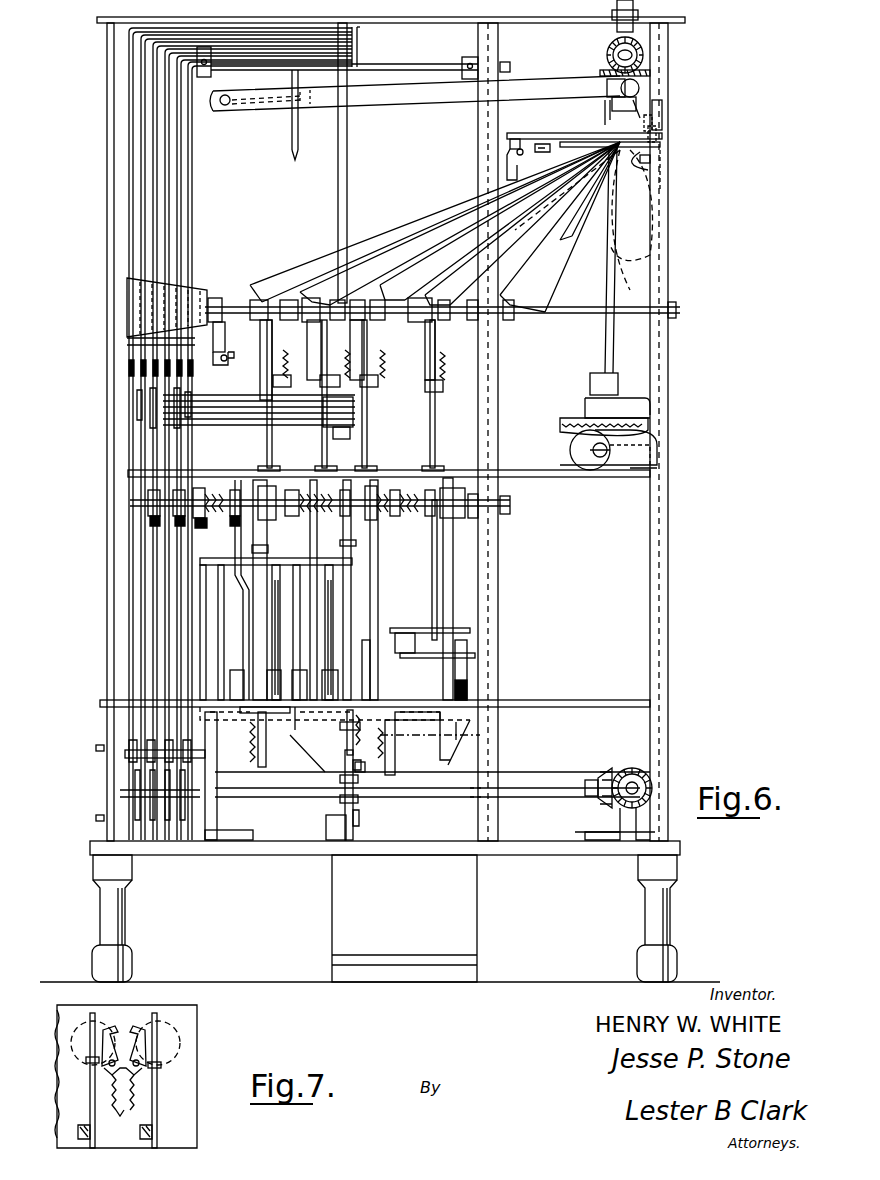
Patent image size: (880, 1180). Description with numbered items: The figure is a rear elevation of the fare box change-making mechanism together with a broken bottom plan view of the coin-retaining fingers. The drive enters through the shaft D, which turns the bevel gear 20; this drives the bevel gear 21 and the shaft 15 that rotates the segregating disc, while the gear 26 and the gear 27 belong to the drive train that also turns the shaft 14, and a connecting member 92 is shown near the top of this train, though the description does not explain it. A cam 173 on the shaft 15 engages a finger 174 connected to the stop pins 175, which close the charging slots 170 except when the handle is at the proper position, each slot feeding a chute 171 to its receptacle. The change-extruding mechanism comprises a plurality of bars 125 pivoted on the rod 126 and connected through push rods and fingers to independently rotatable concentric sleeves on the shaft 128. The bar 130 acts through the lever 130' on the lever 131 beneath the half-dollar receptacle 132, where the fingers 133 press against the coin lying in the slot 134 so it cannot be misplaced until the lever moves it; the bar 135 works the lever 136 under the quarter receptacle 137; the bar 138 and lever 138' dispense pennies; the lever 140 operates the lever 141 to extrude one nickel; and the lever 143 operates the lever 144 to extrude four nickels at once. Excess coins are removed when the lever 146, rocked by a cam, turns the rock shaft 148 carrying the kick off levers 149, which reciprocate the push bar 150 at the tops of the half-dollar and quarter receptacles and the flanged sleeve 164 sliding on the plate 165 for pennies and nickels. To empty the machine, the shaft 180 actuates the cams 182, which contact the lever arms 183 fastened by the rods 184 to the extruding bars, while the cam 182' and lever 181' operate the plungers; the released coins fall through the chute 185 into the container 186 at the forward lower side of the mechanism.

In FIG. 6, the shaft 14 is at (668, 36).
In FIG. 6, the shaft 15 is at (612, 310).
In FIG. 6, the bevel gear 20 is at (578, 450).
In FIG. 6, the bevel gear 21 is at (572, 420).
In FIG. 6, the gear 26 is at (600, 70).
In FIG. 6, the gear 27 is at (607, 50).
In FIG. 6, the ball joint 92 is at (641, 86).
In FIG. 6, the bars 125 is at (281, 40).
In FIG. 6, the rod 126 is at (347, 156).
In FIG. 6, the shaft 128 is at (511, 505).
In FIG. 6, the bar 130 is at (210, 364).
In FIG. 6, the lever 130' is at (487, 589).
In FIG. 6, the lever 131 is at (440, 718).
In FIG. 6, the receptacle 132 is at (467, 672).
In FIG. 7, the receptacle 132 is at (180, 1042).
In FIG. 7, the fingers 133 is at (132, 1028).
In FIG. 6, the slot 134 is at (430, 738).
In FIG. 6, the bar 135 is at (143, 130).
In FIG. 6, the lever 136 is at (399, 749).
In FIG. 6, the receptacle 137 is at (310, 739).
In FIG. 7, the receptacle 137 is at (72, 1043).
In FIG. 6, the bar 138 is at (210, 371).
In FIG. 6, the lever 138' is at (301, 590).
In FIG. 6, the lever 140 is at (167, 189).
In FIG. 6, the lever 141 is at (263, 749).
In FIG. 6, the lever 143 is at (181, 221).
In FIG. 6, the lever 144 is at (250, 742).
In FIG. 6, the lever 146 is at (224, 365).
In FIG. 6, the rock shaft 148 is at (236, 306).
In FIG. 6, the kick off levers 149 is at (282, 440).
In FIG. 6, the push bar 150 is at (365, 608).
In FIG. 6, the sleeve 164 is at (347, 560).
In FIG. 6, the plate 165 is at (238, 541).
In FIG. 6, the slots 170 is at (662, 106).
In FIG. 6, the chute 171 is at (568, 280).
In FIG. 6, the cam 173 is at (660, 158).
In FIG. 6, the finger 174 is at (662, 141).
In FIG. 6, the stop pins 175 is at (656, 124).
In FIG. 6, the shaft 180 is at (290, 797).
In FIG. 6, the cams 182 is at (133, 795).
In FIG. 6, the cam 182' is at (335, 771).
In FIG. 6, the lever 181' is at (334, 735).
In FIG. 6, the lever arms 183 is at (140, 742).
In FIG. 6, the rods 184 is at (140, 688).
In FIG. 6, the chute 185 is at (326, 805).
In FIG. 6, the container 186 is at (340, 905).
In FIG. 6, the shaft D is at (606, 450).